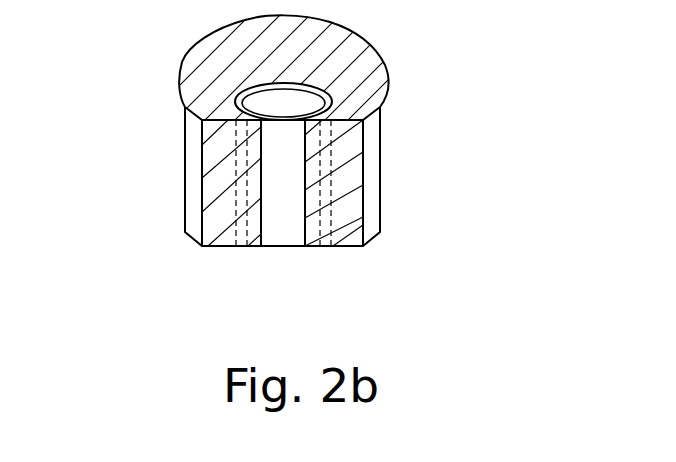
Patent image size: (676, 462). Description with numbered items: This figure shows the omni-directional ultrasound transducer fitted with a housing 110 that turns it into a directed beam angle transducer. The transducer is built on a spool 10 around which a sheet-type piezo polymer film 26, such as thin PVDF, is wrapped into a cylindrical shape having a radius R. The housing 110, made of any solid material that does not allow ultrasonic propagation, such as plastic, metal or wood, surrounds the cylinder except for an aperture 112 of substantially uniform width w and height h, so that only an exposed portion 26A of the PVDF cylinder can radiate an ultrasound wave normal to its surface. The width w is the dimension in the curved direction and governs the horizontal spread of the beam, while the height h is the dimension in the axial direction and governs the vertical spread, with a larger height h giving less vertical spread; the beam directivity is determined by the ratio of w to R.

The housing 110 is at (352, 43).
The spool 10 is at (251, 138).
The piezo polymer film 26 is at (311, 194).
The exposed portion of PVDF cylinder 26A is at (268, 213).
The aperture 112 is at (307, 247).
The radius of the cylinder R is at (285, 121).
The height of the aperture h is at (387, 120).
The width of the aperture w is at (305, 263).